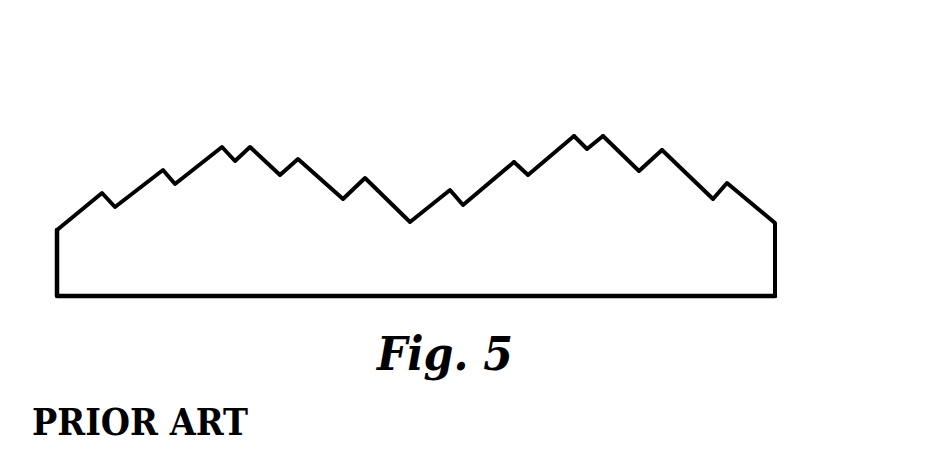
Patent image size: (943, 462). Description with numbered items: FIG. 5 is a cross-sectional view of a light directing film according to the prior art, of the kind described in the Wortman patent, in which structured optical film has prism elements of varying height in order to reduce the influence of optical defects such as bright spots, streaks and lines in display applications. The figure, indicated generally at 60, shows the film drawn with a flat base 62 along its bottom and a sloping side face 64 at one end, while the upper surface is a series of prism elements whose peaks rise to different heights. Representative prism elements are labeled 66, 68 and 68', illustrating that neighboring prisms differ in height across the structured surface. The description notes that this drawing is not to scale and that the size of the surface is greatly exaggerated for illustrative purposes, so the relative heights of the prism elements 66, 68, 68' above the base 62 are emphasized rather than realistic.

The prior art serrated blade profile 60 is at (439, 191).
The base 62 is at (655, 296).
The side face 64 is at (766, 154).
The tooth 66 is at (514, 160).
The tooth 68 is at (610, 106).
The tooth 68' is at (660, 128).